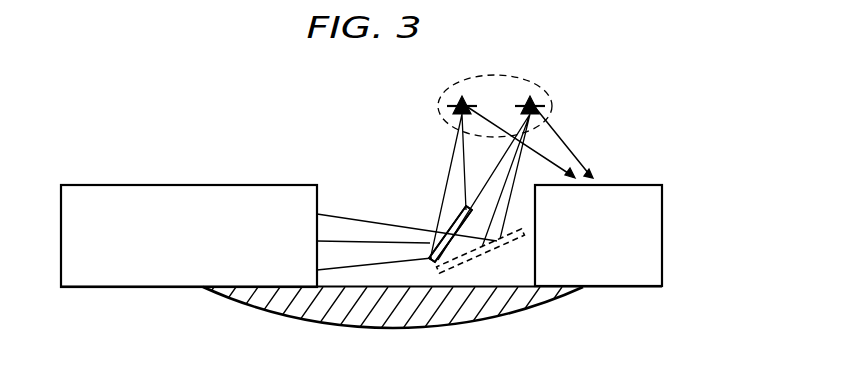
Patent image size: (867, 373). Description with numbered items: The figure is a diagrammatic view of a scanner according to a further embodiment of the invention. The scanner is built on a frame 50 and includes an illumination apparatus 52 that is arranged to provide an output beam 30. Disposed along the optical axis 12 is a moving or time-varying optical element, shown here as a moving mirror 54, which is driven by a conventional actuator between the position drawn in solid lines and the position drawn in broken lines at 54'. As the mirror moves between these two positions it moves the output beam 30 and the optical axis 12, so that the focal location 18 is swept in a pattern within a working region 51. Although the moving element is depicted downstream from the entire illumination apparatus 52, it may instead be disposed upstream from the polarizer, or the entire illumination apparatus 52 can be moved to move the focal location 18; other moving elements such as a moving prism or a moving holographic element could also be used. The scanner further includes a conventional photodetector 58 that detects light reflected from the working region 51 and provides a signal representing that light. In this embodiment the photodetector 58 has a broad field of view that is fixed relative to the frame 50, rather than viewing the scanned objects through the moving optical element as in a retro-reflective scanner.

The optical axis 12 is at (413, 245).
The focal location 18 is at (461, 96).
The output beam 30 is at (352, 217).
The frame 50 is at (531, 296).
The working region 51 is at (537, 83).
The illumination apparatus 52 is at (188, 185).
The moving mirror 54 is at (448, 285).
The second position of moving mirror 54' is at (481, 296).
The photodetector 58 is at (662, 217).